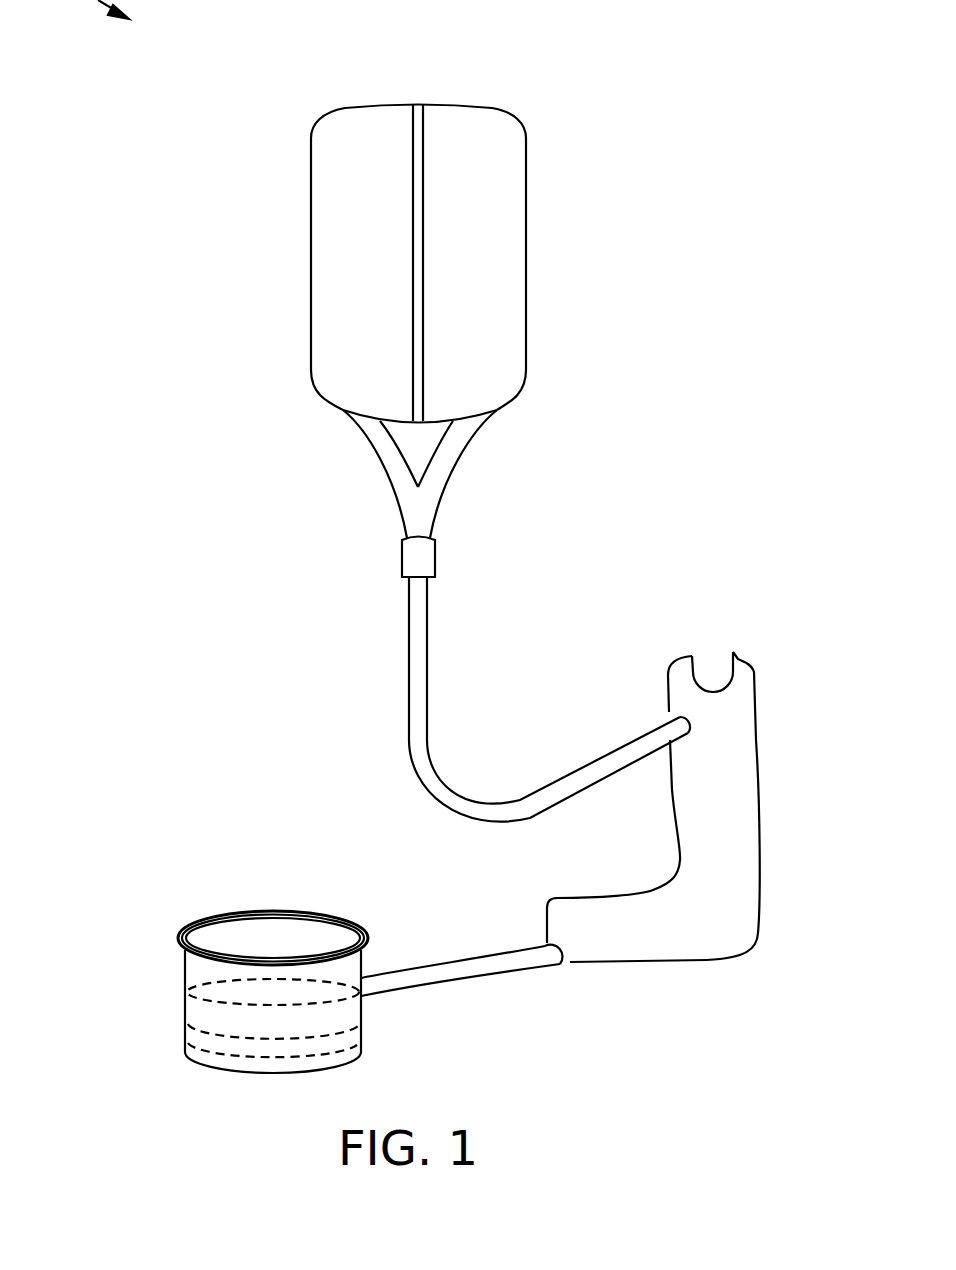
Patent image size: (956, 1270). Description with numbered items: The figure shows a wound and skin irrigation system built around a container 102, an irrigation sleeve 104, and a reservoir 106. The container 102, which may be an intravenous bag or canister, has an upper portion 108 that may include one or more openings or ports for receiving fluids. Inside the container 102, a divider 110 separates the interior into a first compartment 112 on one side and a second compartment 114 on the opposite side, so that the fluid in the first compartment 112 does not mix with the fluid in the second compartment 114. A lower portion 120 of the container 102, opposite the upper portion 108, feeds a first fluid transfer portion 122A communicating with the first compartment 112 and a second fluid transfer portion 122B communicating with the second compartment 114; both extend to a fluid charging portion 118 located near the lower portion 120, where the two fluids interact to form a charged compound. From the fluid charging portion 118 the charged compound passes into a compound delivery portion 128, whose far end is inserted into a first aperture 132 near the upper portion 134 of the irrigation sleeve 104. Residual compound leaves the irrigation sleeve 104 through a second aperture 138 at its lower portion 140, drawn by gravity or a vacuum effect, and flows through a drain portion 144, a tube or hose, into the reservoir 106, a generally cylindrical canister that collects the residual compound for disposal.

The container 102 is at (311, 228).
The irrigation sleeve 104 is at (755, 755).
The reservoir 106 is at (185, 967).
The upper portion 108 is at (400, 105).
The divider 110 is at (423, 238).
The first compartment 112 is at (347, 344).
The second compartment 114 is at (493, 338).
The fluid charging portion 118 is at (402, 553).
The lower portion 120 is at (517, 394).
The first fluid transfer portion 122A is at (377, 449).
The second fluid transfer portion 122B is at (463, 447).
The compound delivery portion 128 is at (408, 702).
The first aperture 132 is at (678, 712).
The upper portion 134 is at (691, 660).
The second aperture 138 is at (556, 937).
The lower portion 140 is at (640, 962).
The drain portion 144 is at (465, 979).